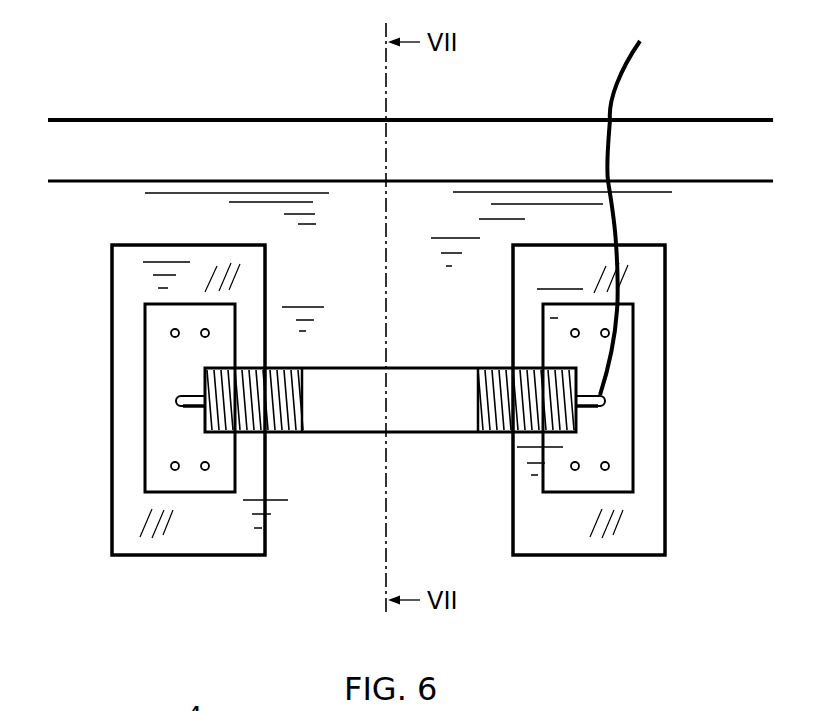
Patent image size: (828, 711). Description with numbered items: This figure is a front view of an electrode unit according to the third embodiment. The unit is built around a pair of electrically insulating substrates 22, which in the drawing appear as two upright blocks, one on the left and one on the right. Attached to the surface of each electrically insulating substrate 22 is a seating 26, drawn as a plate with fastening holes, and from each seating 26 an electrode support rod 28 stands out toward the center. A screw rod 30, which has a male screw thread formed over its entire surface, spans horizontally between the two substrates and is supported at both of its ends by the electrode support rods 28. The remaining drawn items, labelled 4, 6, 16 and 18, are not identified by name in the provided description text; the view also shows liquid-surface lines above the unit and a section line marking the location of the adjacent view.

The hull 4 is at (670, 222).
The deck 6 is at (737, 137).
The left mounting plate 16 is at (175, 358).
The left pin 18 is at (188, 408).
The electrically insulating substrate 22 is at (140, 272).
The seating 26 is at (625, 346).
The electrode support rod 28 is at (597, 410).
The screw rod 30 is at (436, 383).